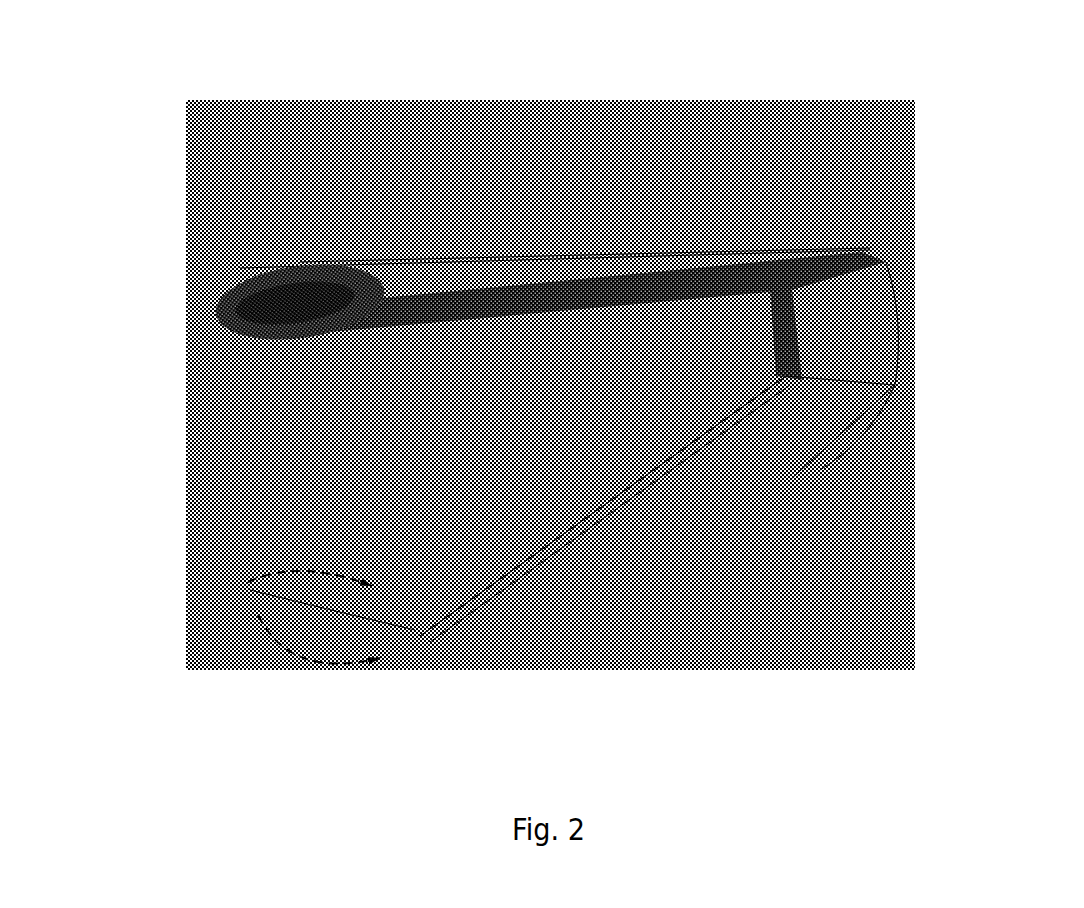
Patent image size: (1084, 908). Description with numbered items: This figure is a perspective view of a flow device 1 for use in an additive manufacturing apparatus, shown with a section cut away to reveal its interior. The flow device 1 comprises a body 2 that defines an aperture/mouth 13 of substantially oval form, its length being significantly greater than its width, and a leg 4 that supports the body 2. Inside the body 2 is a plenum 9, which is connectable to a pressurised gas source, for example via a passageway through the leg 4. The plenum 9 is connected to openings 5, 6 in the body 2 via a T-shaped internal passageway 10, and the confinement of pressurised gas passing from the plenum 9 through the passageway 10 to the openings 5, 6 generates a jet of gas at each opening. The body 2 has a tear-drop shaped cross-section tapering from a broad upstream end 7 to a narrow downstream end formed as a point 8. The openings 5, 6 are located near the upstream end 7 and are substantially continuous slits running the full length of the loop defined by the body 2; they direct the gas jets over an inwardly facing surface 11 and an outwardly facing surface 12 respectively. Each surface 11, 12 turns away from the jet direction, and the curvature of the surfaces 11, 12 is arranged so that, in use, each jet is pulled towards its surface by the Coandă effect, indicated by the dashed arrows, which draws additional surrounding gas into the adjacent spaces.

The flow device 1 is at (380, 245).
The body 2 is at (705, 243).
The leg 4 is at (706, 520).
The opening 5 is at (498, 483).
The opening 6 is at (442, 255).
The upstream end 7 is at (245, 601).
The point 8 is at (537, 590).
The plenum 9 is at (300, 315).
The T-shaped internal passageway 10 is at (228, 290).
The inwardly facing surface 11 is at (690, 467).
The outwardly facing surface 12 is at (542, 262).
The aperture/mouth 13 is at (543, 463).